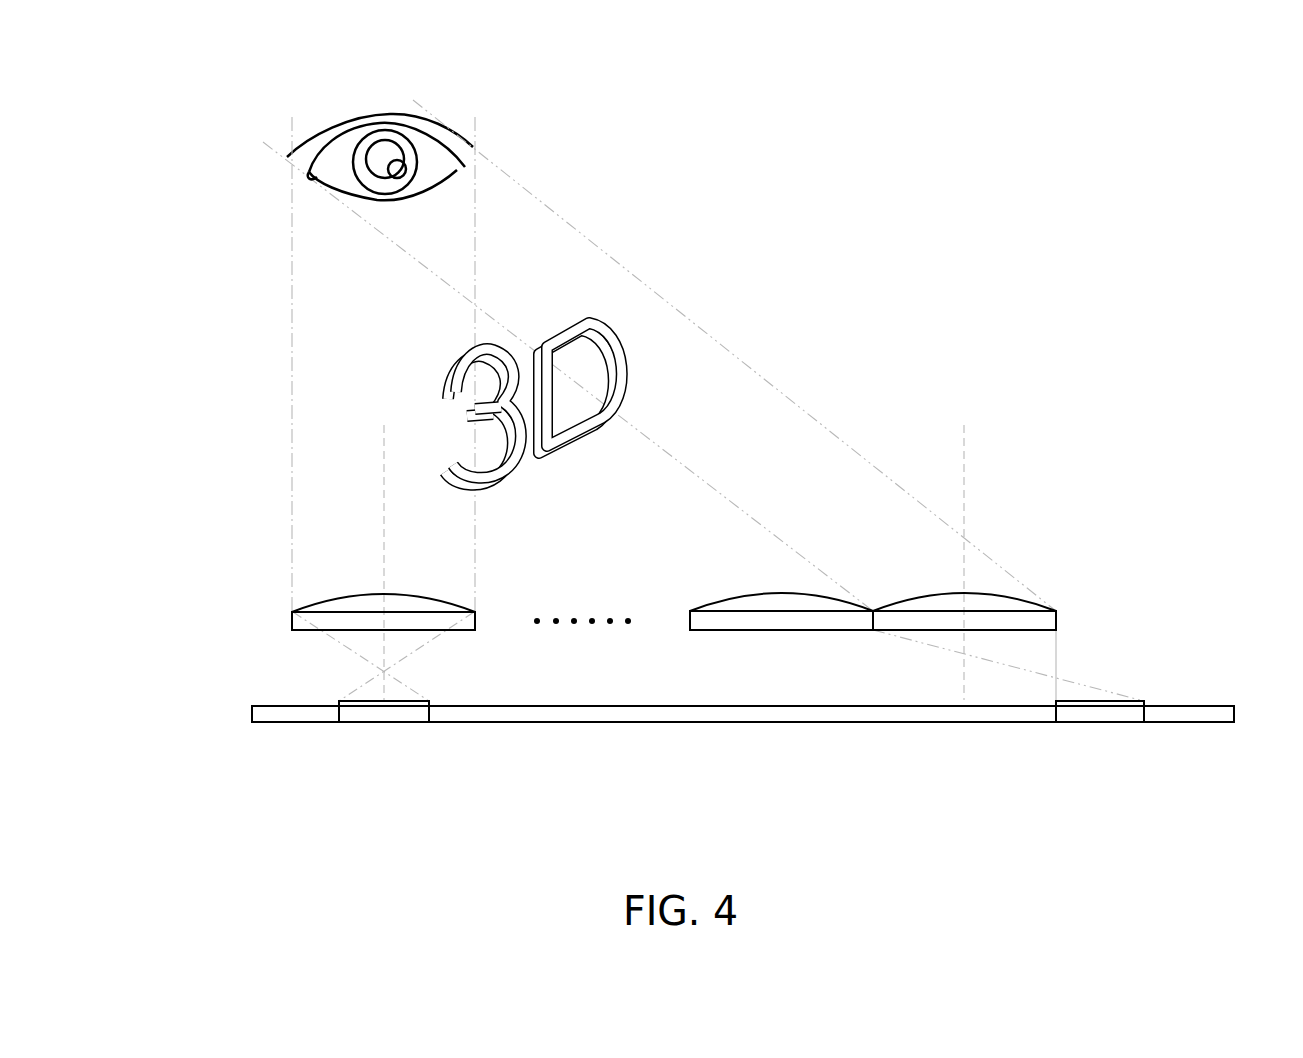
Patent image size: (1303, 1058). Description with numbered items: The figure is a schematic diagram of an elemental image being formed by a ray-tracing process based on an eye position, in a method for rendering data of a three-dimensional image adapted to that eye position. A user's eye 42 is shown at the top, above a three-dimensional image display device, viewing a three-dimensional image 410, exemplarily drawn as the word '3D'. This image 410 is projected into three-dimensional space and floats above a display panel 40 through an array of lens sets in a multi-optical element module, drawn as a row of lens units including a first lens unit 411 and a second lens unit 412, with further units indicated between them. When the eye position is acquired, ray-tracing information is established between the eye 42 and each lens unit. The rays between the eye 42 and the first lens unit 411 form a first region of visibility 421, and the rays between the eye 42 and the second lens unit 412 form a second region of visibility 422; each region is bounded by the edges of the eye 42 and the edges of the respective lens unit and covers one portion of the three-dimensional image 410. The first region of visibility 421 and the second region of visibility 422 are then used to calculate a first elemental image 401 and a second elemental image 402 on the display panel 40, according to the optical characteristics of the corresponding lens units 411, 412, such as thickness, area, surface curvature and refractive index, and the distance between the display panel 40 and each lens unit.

The display panel 40 is at (252, 712).
The first elemental image 401 is at (384, 713).
The second elemental image 402 is at (1102, 713).
The three-dimensional image 410 is at (591, 313).
The first lens unit 411 is at (476, 622).
The second lens unit 412 is at (1057, 622).
The eye 42 is at (342, 124).
The first region of visibility 421 is at (310, 292).
The second region of visibility 422 is at (792, 418).